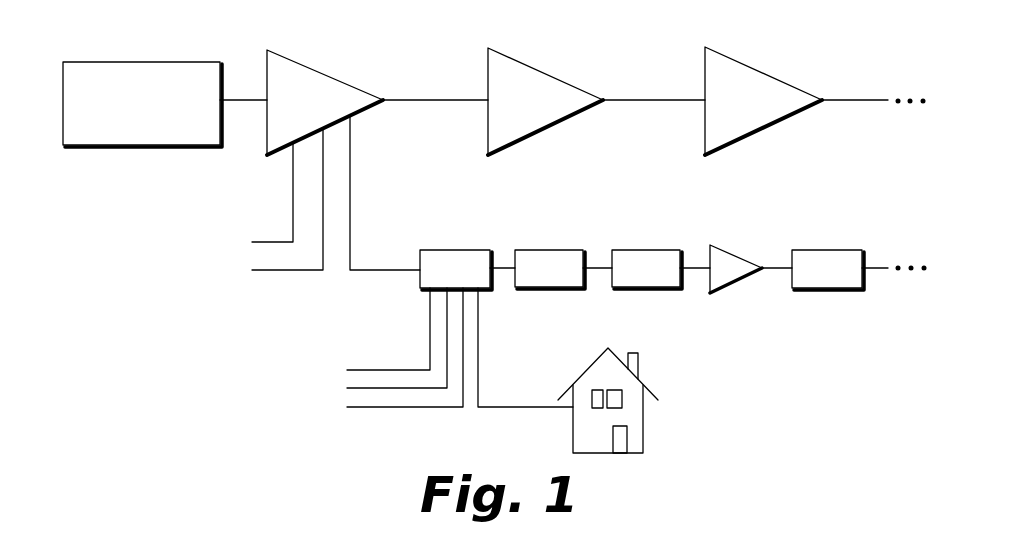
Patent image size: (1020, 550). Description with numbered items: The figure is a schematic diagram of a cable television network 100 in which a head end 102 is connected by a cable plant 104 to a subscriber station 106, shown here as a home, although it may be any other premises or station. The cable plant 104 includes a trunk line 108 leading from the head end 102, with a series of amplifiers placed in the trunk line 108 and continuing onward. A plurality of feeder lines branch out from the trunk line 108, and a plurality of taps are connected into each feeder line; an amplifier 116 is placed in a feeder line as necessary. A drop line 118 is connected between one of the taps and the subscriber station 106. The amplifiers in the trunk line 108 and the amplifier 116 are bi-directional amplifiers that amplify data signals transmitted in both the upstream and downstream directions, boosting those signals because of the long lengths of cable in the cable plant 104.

The cable television network 100 is at (323, 340).
The head end 102 is at (175, 62).
The cable plant 104 is at (452, 153).
The subscriber station 106 is at (645, 387).
The trunk line 108 is at (238, 100).
The amplifier 116 is at (738, 249).
The drop line 118 is at (495, 405).